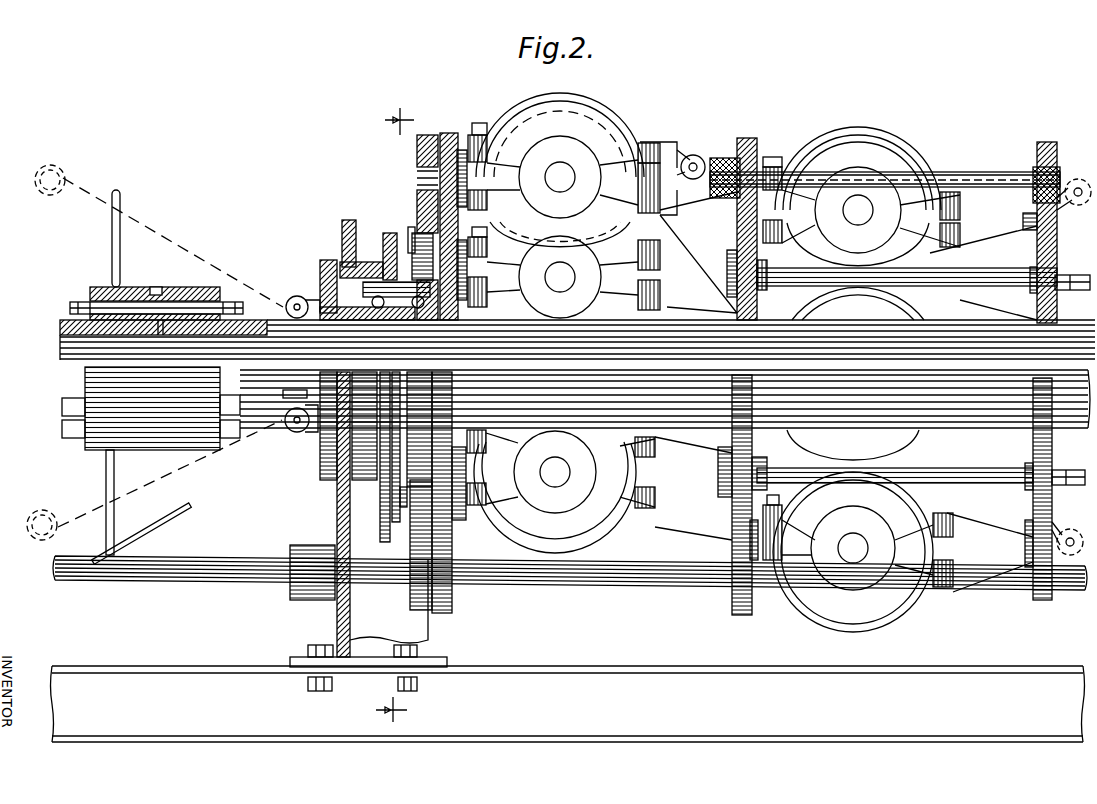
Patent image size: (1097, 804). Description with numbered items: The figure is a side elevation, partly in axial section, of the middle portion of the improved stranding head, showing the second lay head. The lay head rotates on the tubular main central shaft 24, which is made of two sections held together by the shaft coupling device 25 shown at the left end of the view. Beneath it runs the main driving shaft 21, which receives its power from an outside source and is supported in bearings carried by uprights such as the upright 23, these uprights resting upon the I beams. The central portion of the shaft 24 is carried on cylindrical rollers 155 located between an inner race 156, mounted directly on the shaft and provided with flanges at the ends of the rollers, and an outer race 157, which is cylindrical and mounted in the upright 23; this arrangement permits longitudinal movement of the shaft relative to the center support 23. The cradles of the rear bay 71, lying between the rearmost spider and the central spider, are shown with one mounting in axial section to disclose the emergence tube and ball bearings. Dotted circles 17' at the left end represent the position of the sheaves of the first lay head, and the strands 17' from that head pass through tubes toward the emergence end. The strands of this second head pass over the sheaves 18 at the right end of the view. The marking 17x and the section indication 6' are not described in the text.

The sheaves position (dotted circles) 17' is at (73, 347).
The lever position 17x is at (162, 232).
The cylindrical rollers 155 is at (325, 284).
The inner race 156 is at (320, 307).
The outer race 157 is at (343, 262).
The main central shaft 24 is at (62, 328).
The shaft coupling device 25 is at (92, 447).
The main driving shaft 21 is at (147, 580).
The upright 23 is at (337, 630).
The section line 6' is at (395, 415).
The rear bay 71 is at (602, 203).
The sheaves 18 is at (1081, 185).